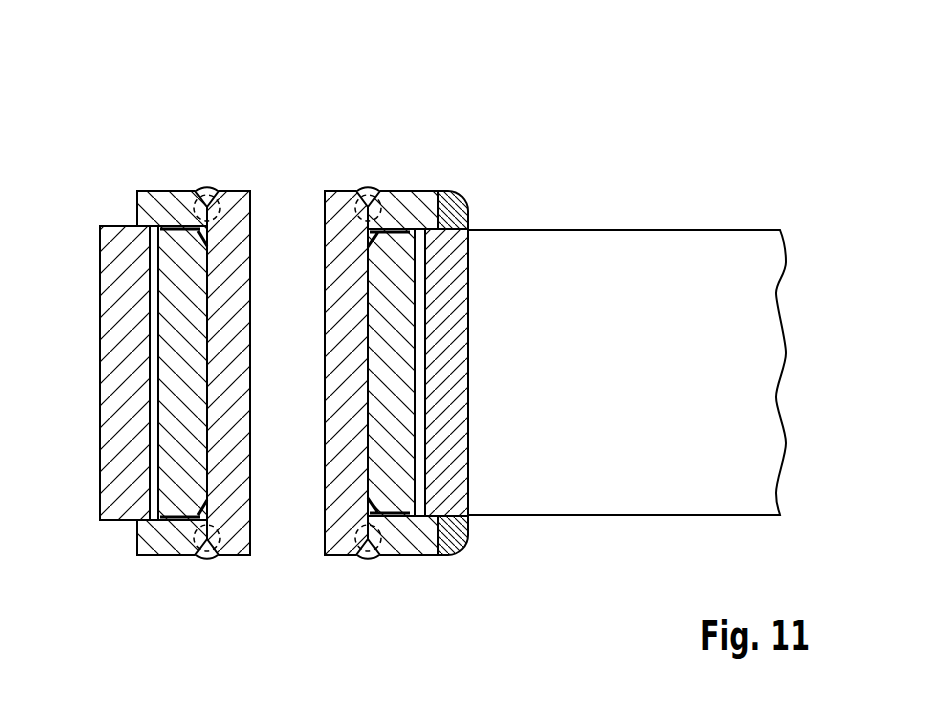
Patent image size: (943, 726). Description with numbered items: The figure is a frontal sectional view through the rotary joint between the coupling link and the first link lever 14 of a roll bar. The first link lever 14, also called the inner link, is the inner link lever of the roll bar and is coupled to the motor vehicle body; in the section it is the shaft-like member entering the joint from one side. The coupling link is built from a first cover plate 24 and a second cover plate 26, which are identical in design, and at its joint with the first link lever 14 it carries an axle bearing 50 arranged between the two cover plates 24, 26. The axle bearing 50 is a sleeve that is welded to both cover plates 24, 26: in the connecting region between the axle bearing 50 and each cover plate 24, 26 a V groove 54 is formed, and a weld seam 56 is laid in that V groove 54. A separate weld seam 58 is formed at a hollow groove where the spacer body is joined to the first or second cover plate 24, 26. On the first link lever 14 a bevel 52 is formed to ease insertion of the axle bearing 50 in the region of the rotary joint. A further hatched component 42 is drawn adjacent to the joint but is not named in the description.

The first link lever 14 is at (605, 230).
The first cover plate 24 is at (158, 203).
The second cover plate 26 is at (412, 540).
The housing block 42 is at (100, 387).
The axle bearing 50 is at (222, 243).
The bevel 52 is at (368, 231).
The V groove 54 is at (365, 191).
The weld seam 56 is at (370, 191).
The weld seam 58 is at (455, 200).